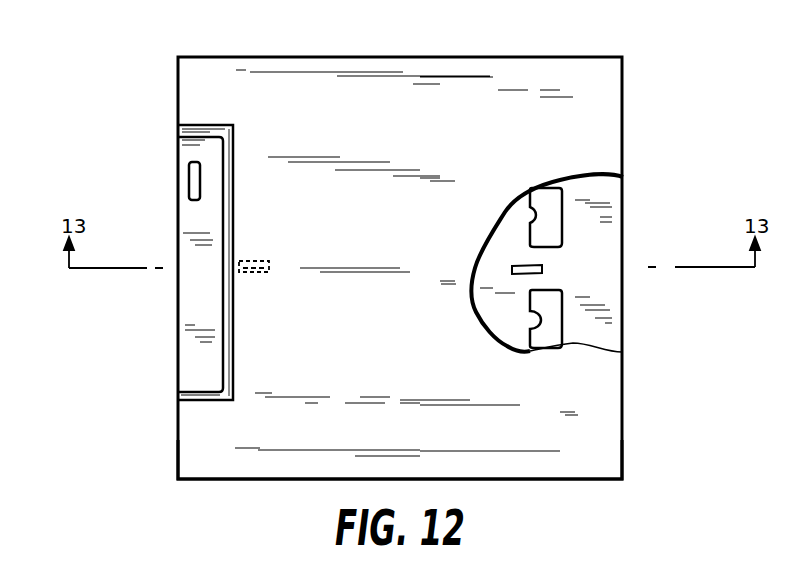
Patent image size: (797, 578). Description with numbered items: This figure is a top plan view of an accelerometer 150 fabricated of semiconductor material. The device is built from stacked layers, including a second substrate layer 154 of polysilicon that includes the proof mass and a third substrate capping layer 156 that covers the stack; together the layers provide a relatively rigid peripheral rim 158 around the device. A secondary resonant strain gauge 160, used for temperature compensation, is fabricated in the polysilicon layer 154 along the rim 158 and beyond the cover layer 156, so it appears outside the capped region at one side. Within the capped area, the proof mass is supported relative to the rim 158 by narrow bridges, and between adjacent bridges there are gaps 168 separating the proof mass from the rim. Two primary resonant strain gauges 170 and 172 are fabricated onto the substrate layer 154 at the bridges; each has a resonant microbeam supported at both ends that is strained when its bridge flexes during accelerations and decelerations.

The accelerometer 150 is at (133, 63).
The second substrate layer 154 is at (593, 248).
The third substrate capping layer 156 is at (463, 68).
The peripheral rim 158 is at (603, 441).
The secondary resonant strain gauge 160 is at (188, 175).
The gaps 168 is at (528, 211).
The primary resonant strain gauge 170 is at (254, 261).
The primary resonant strain gauge 172 is at (514, 271).